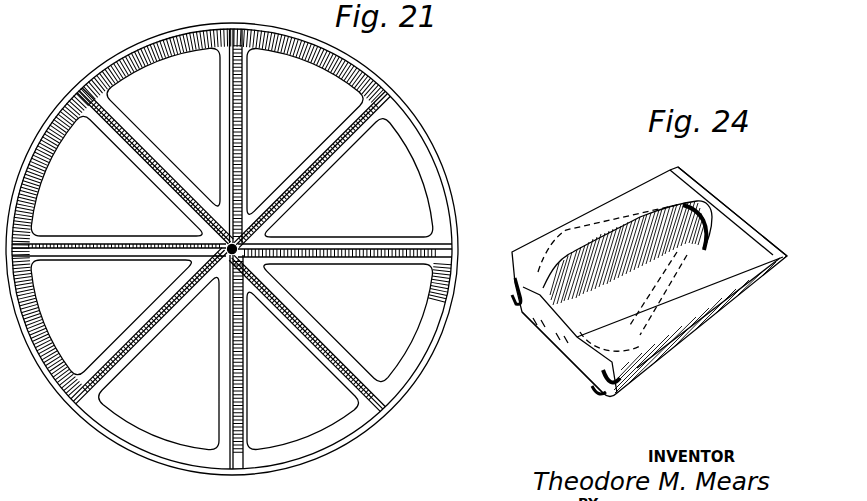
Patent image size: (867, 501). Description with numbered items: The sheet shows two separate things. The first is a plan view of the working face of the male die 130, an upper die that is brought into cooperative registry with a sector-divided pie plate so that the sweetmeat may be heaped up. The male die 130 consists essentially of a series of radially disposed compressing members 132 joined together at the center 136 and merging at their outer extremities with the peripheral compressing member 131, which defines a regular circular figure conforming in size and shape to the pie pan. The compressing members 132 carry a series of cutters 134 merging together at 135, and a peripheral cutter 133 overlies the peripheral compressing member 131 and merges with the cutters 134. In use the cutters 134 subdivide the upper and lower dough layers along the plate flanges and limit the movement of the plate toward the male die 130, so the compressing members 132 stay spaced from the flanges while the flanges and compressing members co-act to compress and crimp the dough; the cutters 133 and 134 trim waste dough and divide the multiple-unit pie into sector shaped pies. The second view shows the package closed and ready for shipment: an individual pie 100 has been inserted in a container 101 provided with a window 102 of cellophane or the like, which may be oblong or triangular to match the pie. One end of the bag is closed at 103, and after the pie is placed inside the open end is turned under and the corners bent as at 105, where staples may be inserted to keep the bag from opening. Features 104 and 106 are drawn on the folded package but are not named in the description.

In FIG. 21, the male die 130 is at (360, 61).
In FIG. 21, the peripheral compressing member 131 is at (388, 97).
In FIG. 21, the compressing members 132 is at (358, 140).
In FIG. 21, the peripheral cutter 133 is at (433, 150).
In FIG. 21, the cutters 134 is at (318, 165).
In FIG. 21, the merging point of cutters 135 is at (265, 236).
In FIG. 21, the center 136 is at (252, 262).
In FIG. 24, the individual pie 100 is at (622, 252).
In FIG. 24, the container 101 is at (568, 235).
In FIG. 24, the window 102 is at (717, 210).
In FIG. 24, the closed end 103 is at (770, 253).
In FIG. 24, the side band 104 is at (538, 338).
In FIG. 24, the bent corners 105 is at (516, 298).
In FIG. 24, the bottom strip 106 is at (520, 300).